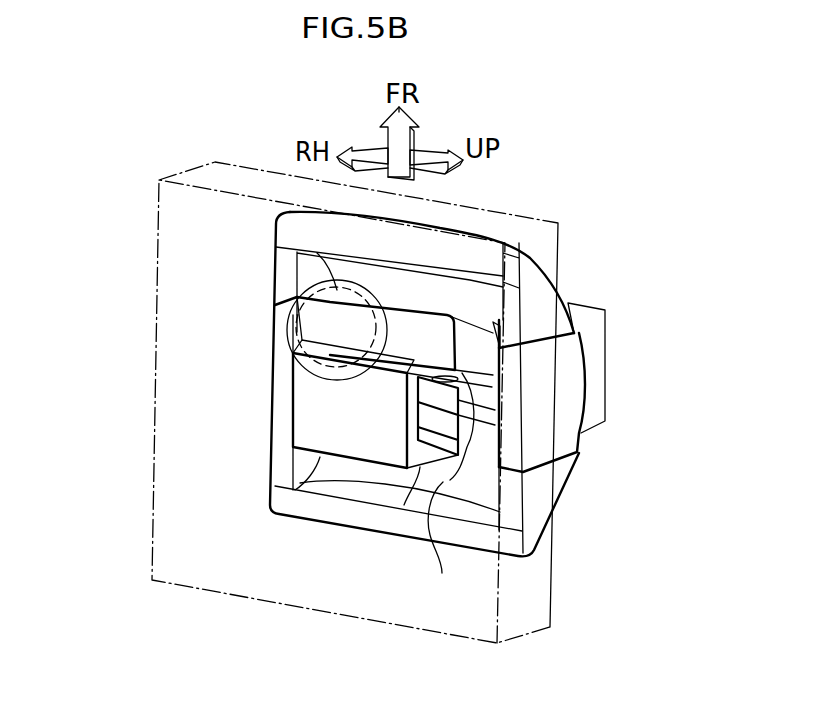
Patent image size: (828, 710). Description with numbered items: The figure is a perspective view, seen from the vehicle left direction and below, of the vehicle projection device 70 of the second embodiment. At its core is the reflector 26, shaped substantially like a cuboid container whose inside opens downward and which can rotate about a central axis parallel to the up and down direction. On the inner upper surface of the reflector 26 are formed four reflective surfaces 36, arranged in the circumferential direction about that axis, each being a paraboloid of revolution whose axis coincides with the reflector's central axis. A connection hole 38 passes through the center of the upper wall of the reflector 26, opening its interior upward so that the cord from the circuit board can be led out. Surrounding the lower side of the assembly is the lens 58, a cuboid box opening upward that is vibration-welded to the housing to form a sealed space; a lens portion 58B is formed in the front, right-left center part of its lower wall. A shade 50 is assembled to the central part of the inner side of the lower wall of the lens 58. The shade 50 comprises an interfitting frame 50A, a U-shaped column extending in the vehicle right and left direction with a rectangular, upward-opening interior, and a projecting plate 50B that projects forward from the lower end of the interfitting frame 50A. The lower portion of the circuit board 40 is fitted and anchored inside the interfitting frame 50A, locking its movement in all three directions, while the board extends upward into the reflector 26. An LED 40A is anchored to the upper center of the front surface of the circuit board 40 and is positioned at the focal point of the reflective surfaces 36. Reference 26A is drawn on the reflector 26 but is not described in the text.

The reflector 26 is at (276, 266).
The bottom wall of bracket 26A is at (354, 493).
The reflective surfaces 36 is at (443, 290).
The connection hole 38 is at (477, 350).
The circuit board 40 is at (563, 452).
The LED 40A is at (427, 495).
The shade 50 is at (291, 398).
The interfitting frame 50A is at (420, 467).
The projecting plate 50B is at (293, 349).
The lens 58 is at (160, 180).
The lens portion 58B is at (297, 332).
The vehicle projection device 70 is at (576, 166).